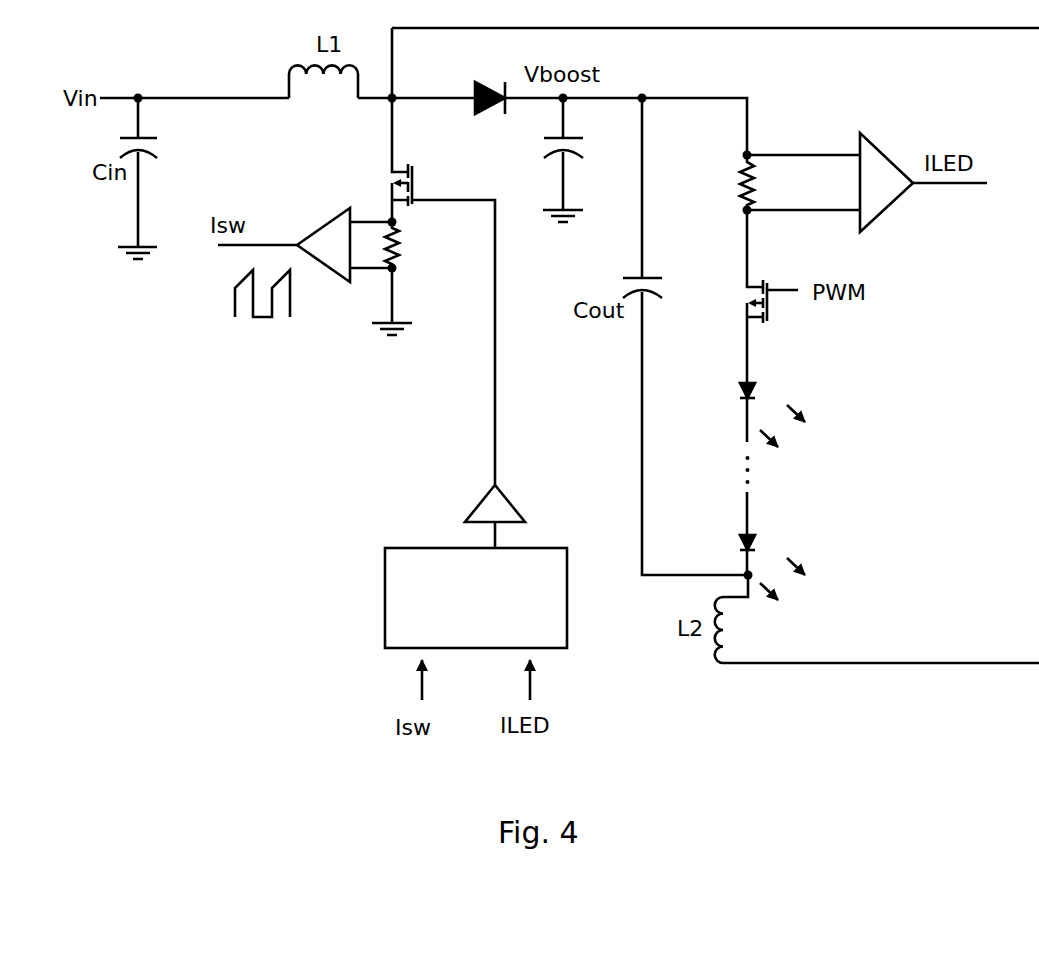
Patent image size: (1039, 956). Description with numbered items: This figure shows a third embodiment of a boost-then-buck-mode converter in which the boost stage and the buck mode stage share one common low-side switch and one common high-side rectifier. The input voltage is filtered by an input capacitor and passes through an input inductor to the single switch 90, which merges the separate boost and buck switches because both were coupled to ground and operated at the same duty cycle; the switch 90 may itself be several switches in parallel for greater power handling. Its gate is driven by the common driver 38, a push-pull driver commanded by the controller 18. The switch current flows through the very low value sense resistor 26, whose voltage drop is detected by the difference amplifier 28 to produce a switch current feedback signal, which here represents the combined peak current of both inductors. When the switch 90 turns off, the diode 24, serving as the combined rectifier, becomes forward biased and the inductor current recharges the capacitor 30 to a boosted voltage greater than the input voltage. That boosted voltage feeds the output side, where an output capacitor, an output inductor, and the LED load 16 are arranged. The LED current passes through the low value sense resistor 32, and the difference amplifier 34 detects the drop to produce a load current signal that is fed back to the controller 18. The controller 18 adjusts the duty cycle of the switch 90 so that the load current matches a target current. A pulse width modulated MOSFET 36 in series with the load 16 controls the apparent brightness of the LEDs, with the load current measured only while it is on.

The load 16 is at (838, 490).
The controller 18 is at (385, 598).
The diode 24 is at (492, 80).
The sense resistor 26 is at (408, 242).
The difference amplifier 28 is at (318, 225).
The capacitor 30 is at (535, 145).
The sense resistor 32 is at (760, 193).
The difference amplifier 34 is at (885, 210).
The PWM MOSFET 36 is at (735, 292).
The driver 38 is at (477, 507).
The switch 90 is at (375, 173).